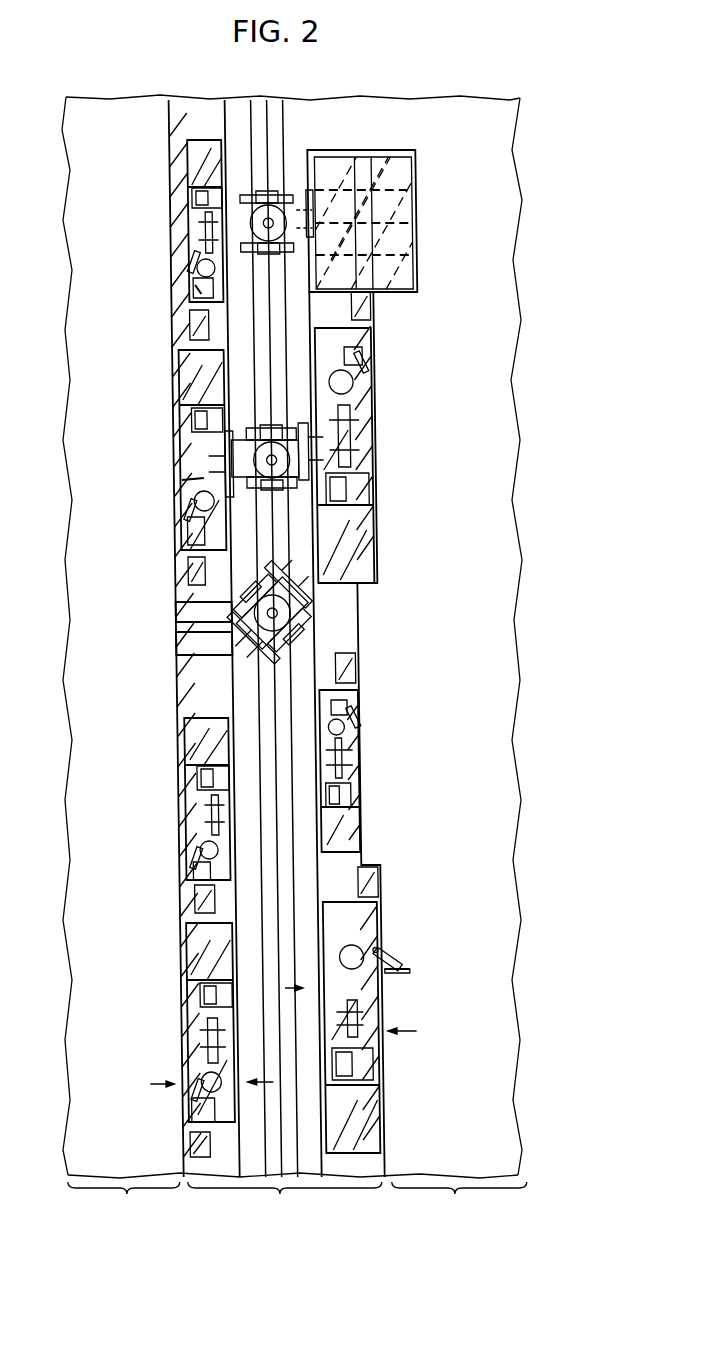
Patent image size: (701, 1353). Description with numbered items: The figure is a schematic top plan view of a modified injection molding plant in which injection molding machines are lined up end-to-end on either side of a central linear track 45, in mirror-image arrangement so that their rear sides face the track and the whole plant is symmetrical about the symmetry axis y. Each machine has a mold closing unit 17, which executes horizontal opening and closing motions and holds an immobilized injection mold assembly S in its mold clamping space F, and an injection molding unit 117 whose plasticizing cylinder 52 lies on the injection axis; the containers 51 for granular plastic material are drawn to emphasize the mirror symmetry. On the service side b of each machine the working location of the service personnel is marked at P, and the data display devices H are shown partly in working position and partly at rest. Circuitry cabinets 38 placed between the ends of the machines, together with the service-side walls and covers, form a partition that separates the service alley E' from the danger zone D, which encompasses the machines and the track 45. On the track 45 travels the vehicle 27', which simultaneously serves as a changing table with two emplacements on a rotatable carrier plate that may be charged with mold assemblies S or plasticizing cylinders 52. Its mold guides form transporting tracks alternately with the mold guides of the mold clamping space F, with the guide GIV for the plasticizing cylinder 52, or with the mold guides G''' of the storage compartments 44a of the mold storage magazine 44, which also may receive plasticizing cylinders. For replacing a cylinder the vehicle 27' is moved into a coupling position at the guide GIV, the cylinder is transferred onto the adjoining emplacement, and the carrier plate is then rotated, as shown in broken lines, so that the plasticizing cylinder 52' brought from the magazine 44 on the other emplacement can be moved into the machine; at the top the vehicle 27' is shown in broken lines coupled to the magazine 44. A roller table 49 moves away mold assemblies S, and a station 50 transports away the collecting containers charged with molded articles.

The vehicle 27' is at (250, 349).
The linear track 45 is at (283, 152).
The plasticizing cylinder 52 is at (269, 592).
The mold guides of the storage compartments G''' is at (363, 202).
The storage compartment 44a is at (412, 176).
The mold storage magazine 44 is at (420, 214).
The mold clamping space F is at (200, 202).
The injection mold assembly S is at (178, 213).
The container for granular plastic material 51 is at (197, 268).
The data display device H is at (193, 292).
The circuitry cabinet 38 is at (190, 322).
The guide for the plasticizing cylinder GIV is at (212, 476).
The roller table 49 is at (170, 604).
The station for transporting away collecting containers 50 is at (170, 650).
The plasticizing cylinder on the other emplacement 52' is at (320, 612).
The injection molding unit 117 is at (412, 350).
The mold closing unit 17 is at (412, 505).
The working location of the service personnel P is at (399, 983).
The service side b is at (286, 1060).
The direction r is at (275, 1037).
The symmetry axis y is at (269, 638).
The danger zone D is at (278, 762).
The service alley E' is at (290, 666).